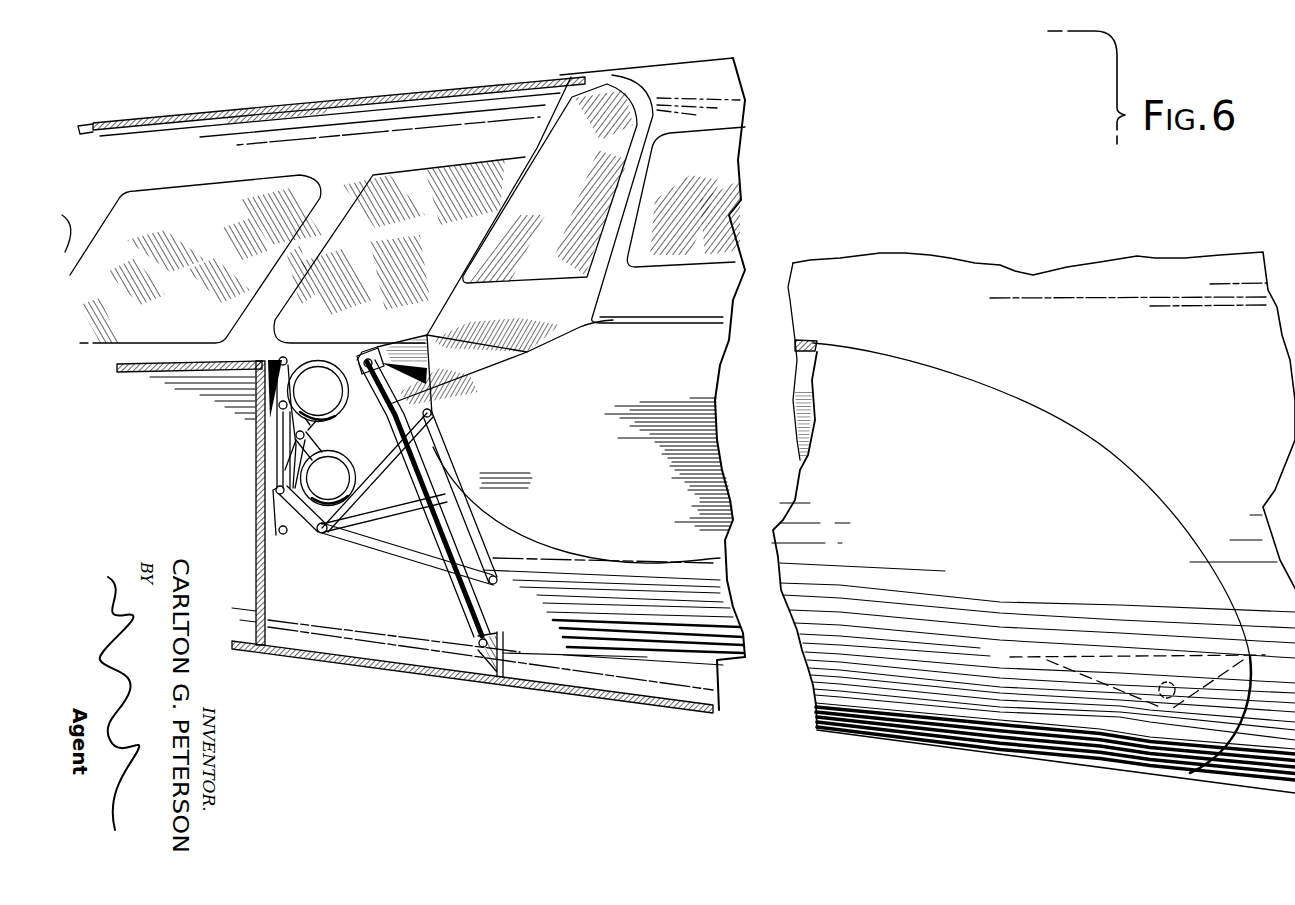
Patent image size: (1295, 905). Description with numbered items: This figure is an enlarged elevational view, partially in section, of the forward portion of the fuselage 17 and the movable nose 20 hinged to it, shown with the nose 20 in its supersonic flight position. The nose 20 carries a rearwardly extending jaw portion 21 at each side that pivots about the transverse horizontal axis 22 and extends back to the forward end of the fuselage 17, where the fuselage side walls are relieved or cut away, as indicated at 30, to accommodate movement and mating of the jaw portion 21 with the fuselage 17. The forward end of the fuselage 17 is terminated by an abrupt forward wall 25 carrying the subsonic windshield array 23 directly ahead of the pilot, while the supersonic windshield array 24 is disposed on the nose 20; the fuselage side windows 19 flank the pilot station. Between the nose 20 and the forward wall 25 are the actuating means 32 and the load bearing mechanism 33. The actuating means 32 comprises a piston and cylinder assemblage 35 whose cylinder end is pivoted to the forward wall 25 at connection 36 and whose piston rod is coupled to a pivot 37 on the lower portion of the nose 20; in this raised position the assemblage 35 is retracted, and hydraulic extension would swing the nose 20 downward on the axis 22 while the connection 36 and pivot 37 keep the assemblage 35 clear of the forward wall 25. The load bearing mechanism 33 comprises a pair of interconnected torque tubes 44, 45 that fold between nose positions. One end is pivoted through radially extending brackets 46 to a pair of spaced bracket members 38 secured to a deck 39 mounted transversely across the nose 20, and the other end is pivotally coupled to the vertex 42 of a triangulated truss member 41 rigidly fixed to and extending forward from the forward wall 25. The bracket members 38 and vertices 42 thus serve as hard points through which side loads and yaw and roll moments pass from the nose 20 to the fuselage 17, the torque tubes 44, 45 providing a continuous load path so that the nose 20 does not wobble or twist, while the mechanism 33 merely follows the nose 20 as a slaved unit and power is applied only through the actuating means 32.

The fuselage 17 is at (652, 66).
The fuselage side windows 19 is at (694, 204).
The movable nose 20 is at (383, 665).
The jaw portion 21 is at (971, 492).
The axis 22 is at (1158, 688).
The windshield array 23 is at (573, 204).
The windshield array 24 is at (353, 106).
The forward wall 25 is at (438, 447).
The relieved side walls 30 is at (800, 378).
The actuating means 32 is at (432, 588).
The load bearing mechanism 33 is at (287, 552).
The piston and cylinder assemblage 35 is at (453, 610).
The connection 36 is at (366, 360).
The pivot 37 is at (476, 646).
The bracket members 38 is at (292, 360).
The deck 39 is at (175, 362).
The triangulated truss member 41 is at (371, 552).
The vertex 42 is at (321, 534).
The torque tube 44 is at (330, 362).
The torque tube 45 is at (353, 462).
The brackets 46 is at (295, 362).